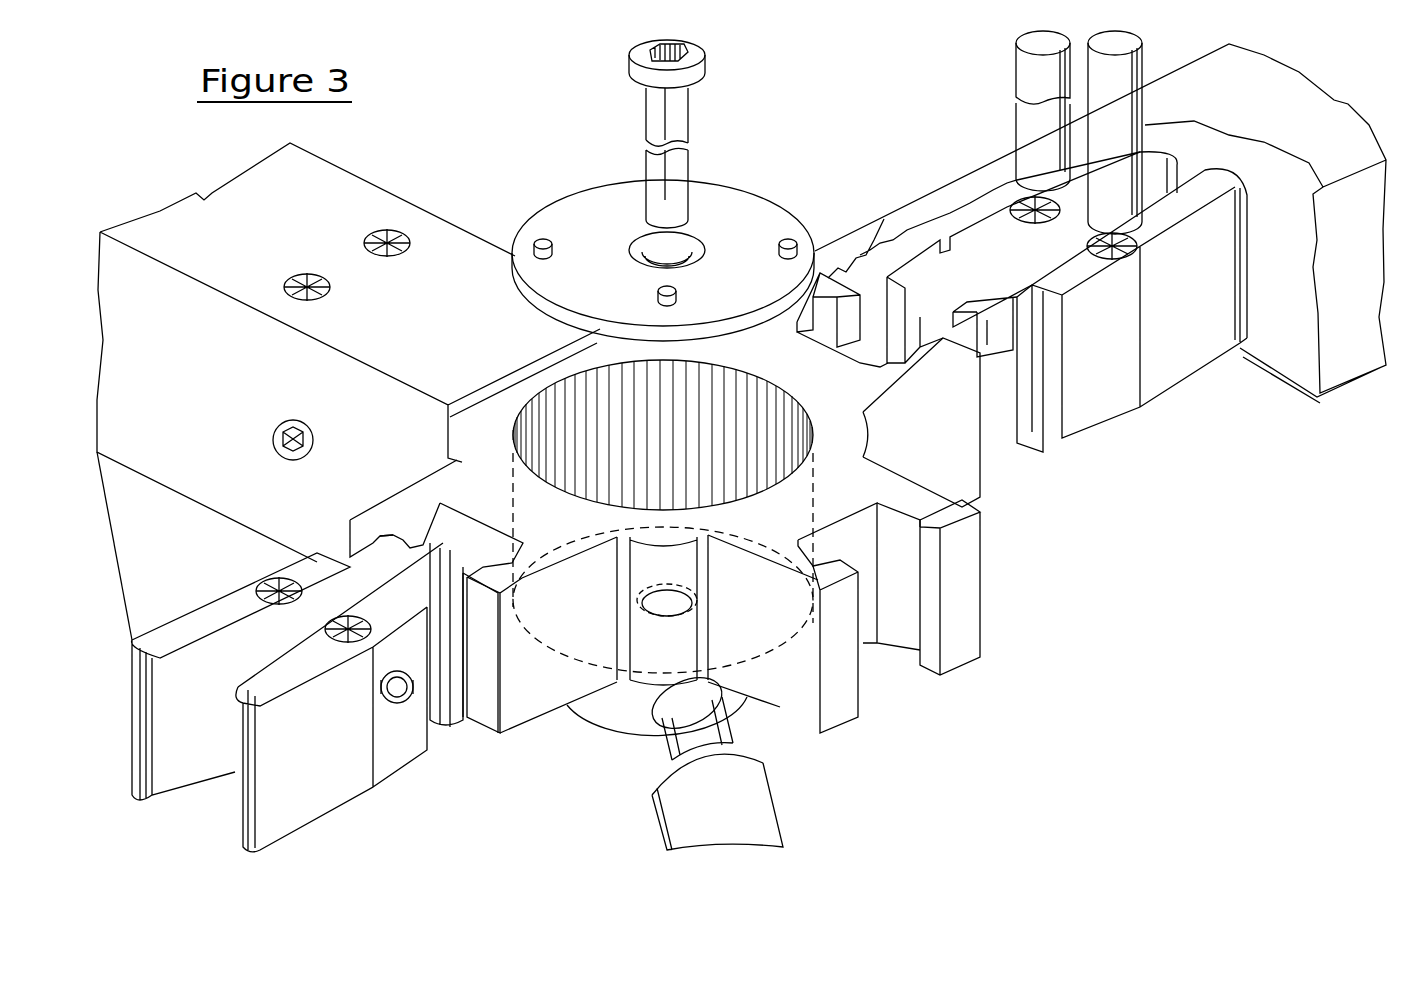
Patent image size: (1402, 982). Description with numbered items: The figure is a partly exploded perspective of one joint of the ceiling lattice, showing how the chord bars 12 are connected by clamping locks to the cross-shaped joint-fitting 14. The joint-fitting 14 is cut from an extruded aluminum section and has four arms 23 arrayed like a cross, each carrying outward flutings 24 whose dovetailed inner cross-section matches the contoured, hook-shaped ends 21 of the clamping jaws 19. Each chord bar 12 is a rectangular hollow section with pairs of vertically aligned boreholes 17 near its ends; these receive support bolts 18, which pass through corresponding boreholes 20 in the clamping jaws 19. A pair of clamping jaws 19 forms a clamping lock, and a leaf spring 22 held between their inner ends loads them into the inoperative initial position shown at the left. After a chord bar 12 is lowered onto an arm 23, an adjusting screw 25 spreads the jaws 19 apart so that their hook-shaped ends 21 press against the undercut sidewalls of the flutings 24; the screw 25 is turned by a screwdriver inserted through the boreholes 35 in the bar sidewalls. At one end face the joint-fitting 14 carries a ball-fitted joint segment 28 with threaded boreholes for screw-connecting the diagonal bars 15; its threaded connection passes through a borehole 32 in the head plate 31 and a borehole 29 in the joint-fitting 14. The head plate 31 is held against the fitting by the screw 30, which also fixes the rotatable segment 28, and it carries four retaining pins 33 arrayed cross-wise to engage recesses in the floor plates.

The chord bar 12 is at (160, 465).
The joint-fitting 14 is at (537, 732).
The diagonal bar 15 is at (758, 827).
The boreholes 17 is at (388, 258).
The support bolts 18 is at (1110, 53).
The clamping jaws 19 is at (310, 657).
The boreholes 20 is at (337, 622).
The hook-shaped ends 21 is at (427, 600).
The leaf spring 22 is at (178, 748).
The arms 23 is at (395, 497).
The flutings 24 is at (480, 540).
The adjusting screw 25 is at (290, 460).
The ball-fitted joint segment 28 is at (628, 712).
The borehole 29 is at (653, 613).
The screw 30 is at (677, 133).
The head plate 31 is at (605, 207).
The borehole 32 is at (703, 250).
The retaining pins 33 is at (660, 297).
The boreholes 35 is at (284, 418).